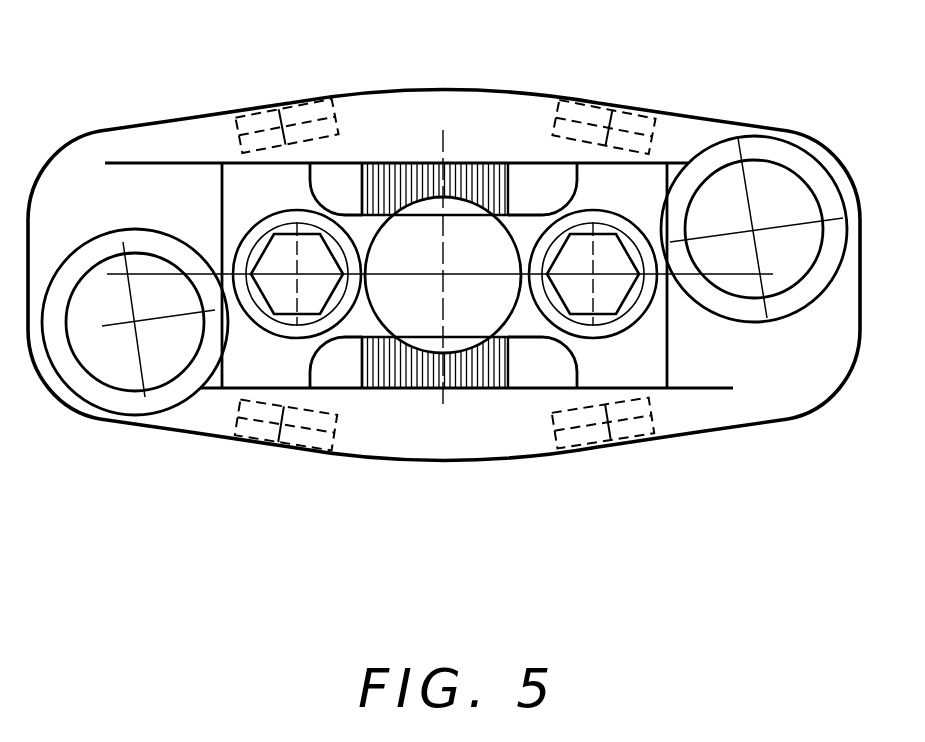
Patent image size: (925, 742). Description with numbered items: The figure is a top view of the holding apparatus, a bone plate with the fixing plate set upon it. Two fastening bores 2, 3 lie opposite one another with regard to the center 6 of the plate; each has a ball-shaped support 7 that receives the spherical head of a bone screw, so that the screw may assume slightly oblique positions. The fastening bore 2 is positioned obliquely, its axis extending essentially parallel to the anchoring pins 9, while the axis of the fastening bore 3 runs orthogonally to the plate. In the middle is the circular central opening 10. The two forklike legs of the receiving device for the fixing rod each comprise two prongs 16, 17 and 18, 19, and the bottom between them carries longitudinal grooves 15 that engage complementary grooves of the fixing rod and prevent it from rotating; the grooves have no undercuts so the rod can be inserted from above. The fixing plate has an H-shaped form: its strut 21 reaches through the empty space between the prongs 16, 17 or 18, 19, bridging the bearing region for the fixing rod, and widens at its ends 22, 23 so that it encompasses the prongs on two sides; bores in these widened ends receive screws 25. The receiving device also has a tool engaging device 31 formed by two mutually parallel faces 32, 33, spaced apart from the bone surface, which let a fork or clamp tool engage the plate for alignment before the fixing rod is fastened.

The fastening bore 2 is at (87, 340).
The fastening bore 3 is at (773, 212).
The center 6 is at (452, 305).
The ball-shaped support 7 is at (122, 398).
The anchoring pins 9 is at (258, 137).
The central opening 10 is at (453, 252).
The longitudinal grooves 15 is at (394, 163).
The prong 16 is at (343, 183).
The prong 17 is at (340, 367).
The prong 18 is at (537, 192).
The prong 19 is at (545, 365).
The strut 21 is at (363, 238).
The widened end 22 is at (248, 197).
The widened end 23 is at (617, 195).
The screws 25 is at (247, 270).
The tool engaging device 31 is at (465, 160).
The face 32 is at (433, 362).
The face 33 is at (453, 393).